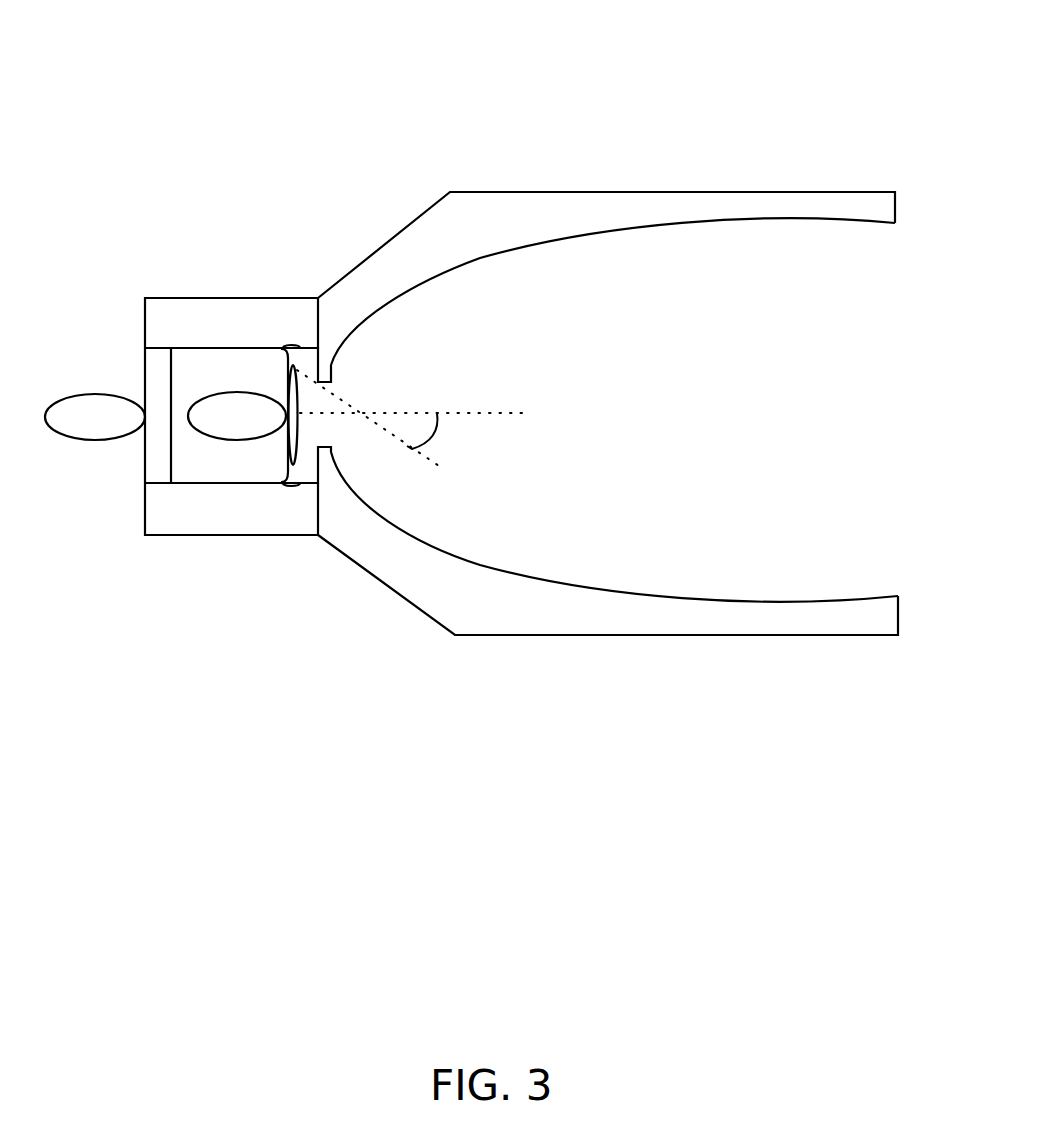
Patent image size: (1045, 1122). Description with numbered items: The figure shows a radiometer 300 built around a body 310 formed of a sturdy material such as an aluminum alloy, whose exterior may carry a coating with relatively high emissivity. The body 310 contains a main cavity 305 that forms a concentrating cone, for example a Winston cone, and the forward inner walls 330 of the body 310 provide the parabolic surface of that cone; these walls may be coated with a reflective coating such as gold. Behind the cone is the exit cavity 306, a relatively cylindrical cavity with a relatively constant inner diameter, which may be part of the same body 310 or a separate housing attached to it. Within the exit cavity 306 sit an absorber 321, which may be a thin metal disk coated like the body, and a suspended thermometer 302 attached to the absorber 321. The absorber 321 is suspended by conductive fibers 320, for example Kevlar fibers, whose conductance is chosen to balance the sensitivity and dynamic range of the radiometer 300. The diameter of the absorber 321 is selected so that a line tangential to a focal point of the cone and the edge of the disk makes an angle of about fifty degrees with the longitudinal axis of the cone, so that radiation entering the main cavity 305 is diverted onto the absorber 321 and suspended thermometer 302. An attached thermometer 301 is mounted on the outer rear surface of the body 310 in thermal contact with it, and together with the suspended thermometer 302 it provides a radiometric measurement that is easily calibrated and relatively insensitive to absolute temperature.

The radiometer 300 is at (580, 48).
The attached thermometer 301 is at (108, 393).
The suspended thermometer 302 is at (217, 437).
The main cavity 305 is at (583, 425).
The exit cavity 306 is at (218, 470).
The body 310 is at (478, 218).
The conductive fibers 320 is at (283, 362).
The absorber 321 is at (290, 377).
The forward inner walls 330 is at (688, 226).